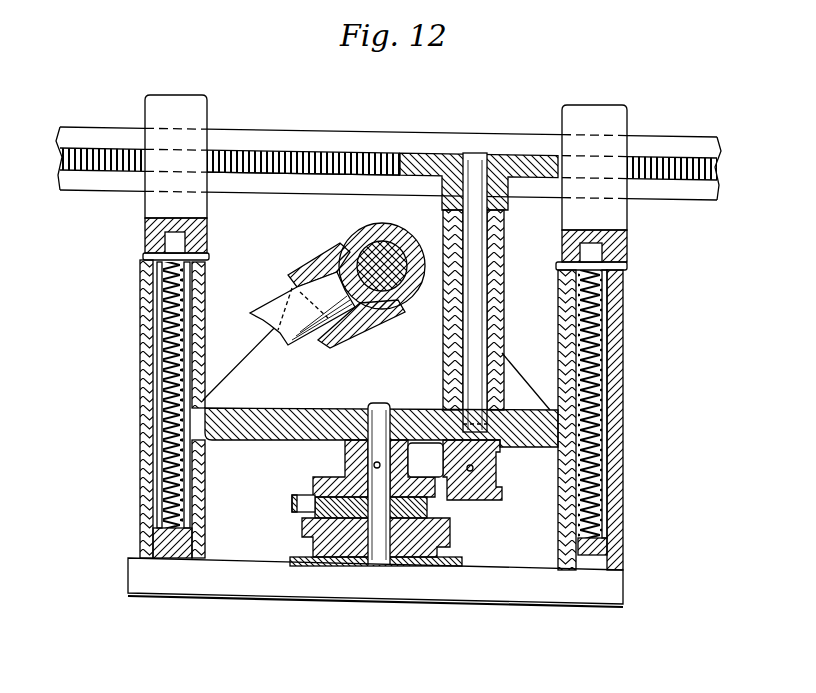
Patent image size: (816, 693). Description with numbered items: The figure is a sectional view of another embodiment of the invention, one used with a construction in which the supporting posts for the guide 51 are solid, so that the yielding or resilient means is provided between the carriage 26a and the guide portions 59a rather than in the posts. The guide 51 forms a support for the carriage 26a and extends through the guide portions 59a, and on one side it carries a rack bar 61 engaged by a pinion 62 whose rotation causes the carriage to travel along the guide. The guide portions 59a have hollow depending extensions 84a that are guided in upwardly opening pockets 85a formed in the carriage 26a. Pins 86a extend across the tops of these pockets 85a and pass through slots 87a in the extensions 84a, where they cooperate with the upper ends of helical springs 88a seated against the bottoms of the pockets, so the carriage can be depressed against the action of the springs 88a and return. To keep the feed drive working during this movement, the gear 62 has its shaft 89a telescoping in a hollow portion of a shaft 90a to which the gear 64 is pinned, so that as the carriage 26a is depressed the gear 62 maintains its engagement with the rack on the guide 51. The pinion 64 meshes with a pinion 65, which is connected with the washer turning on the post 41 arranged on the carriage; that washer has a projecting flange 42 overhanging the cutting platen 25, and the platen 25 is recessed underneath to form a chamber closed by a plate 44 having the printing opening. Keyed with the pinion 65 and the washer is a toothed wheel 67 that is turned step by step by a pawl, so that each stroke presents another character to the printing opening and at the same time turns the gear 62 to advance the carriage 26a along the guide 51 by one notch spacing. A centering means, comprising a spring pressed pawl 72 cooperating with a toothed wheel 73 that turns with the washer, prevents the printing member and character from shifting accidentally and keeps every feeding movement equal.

The cutting platen 25 is at (508, 592).
The carriage 26a is at (295, 408).
The post 41 is at (378, 560).
The projecting flange 42 is at (290, 550).
The plate 44 is at (345, 460).
The guide 51 is at (332, 130).
The guide portions 59a is at (203, 225).
The rack bar 61 is at (280, 158).
The pinion 62 is at (416, 158).
The pinion 64 is at (500, 490).
The pinion 65 is at (318, 478).
The toothed wheel 67 is at (440, 543).
The spring pressed pawl 72 is at (265, 480).
The toothed wheel 73 is at (440, 510).
The hollow depending extensions 84a is at (152, 433).
The pockets 85a is at (153, 347).
The pins 86a is at (207, 260).
The slots 87a is at (150, 313).
The helical springs 88a is at (178, 338).
The shaft 89a is at (491, 247).
The hollow shaft 90a is at (442, 318).